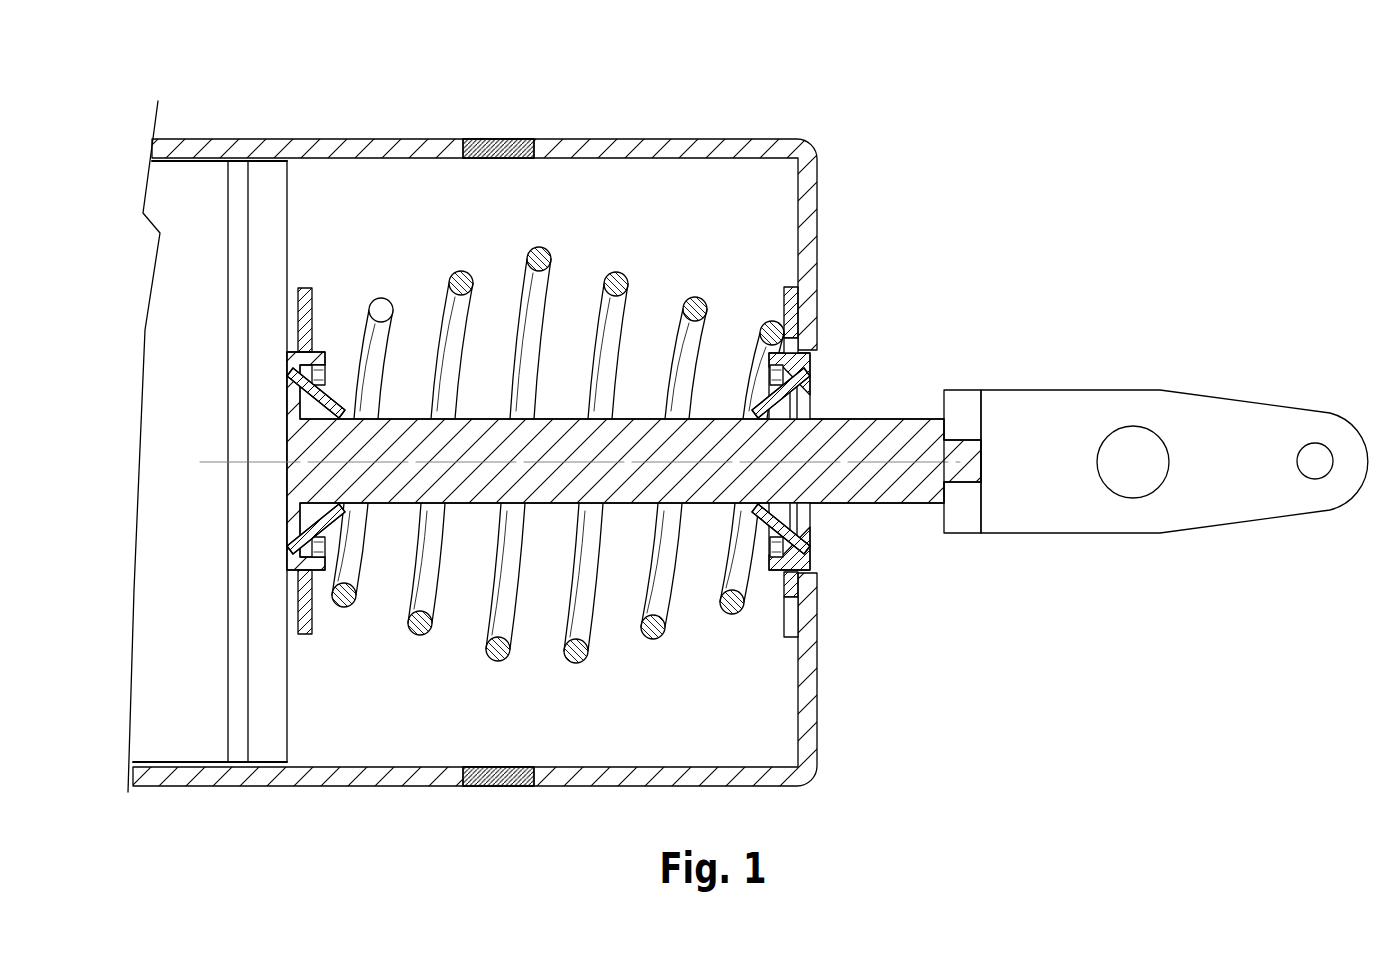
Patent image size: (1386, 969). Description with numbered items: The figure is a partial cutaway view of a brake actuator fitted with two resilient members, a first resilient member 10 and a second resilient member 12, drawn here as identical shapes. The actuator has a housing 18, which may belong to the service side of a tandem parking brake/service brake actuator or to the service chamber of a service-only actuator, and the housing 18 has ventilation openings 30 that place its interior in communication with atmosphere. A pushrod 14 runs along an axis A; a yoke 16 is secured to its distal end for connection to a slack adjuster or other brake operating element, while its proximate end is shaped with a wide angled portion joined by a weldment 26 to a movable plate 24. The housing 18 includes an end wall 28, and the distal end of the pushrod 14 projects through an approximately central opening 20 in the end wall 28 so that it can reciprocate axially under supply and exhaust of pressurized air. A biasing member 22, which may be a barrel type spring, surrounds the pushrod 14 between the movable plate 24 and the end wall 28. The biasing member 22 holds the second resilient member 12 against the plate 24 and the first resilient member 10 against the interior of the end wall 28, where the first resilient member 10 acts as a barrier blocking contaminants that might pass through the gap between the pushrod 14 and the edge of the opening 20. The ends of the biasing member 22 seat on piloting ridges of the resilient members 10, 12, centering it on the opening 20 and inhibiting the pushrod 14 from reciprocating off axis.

The first resilient member 10 is at (812, 368).
The second resilient member 12 is at (322, 352).
The pushrod 14 is at (862, 500).
The yoke 16 is at (1067, 534).
The housing 18 is at (818, 622).
The central opening 20 is at (824, 570).
The biasing member 22 is at (728, 620).
The movable plate 24 is at (268, 687).
The weldment 26 is at (307, 503).
The end wall 28 is at (818, 712).
The ventilation openings 30 is at (495, 138).